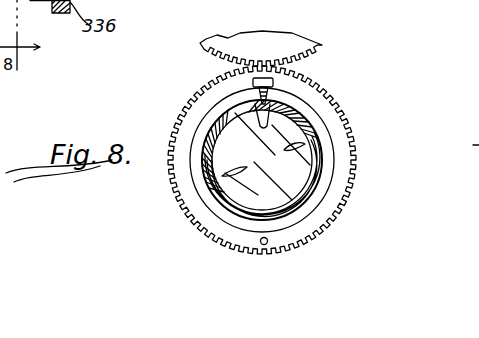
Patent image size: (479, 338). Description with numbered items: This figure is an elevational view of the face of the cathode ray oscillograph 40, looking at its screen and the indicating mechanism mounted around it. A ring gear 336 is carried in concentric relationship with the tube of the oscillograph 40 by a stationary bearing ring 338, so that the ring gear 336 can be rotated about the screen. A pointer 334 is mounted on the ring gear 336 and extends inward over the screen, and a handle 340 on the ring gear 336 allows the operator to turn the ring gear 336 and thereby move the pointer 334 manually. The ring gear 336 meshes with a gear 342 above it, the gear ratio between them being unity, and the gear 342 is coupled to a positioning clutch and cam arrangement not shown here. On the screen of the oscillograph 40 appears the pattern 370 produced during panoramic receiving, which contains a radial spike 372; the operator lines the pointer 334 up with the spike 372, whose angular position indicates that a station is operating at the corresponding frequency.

The ring gear 336 is at (341, 183).
The stationary bearing ring 338 is at (193, 126).
The cathode ray oscillograph 40 is at (317, 167).
The gear 342 is at (275, 40).
The pointer 334 is at (268, 96).
The radial spike 372 is at (268, 121).
The pattern 370 is at (287, 180).
The handle 340 is at (270, 244).